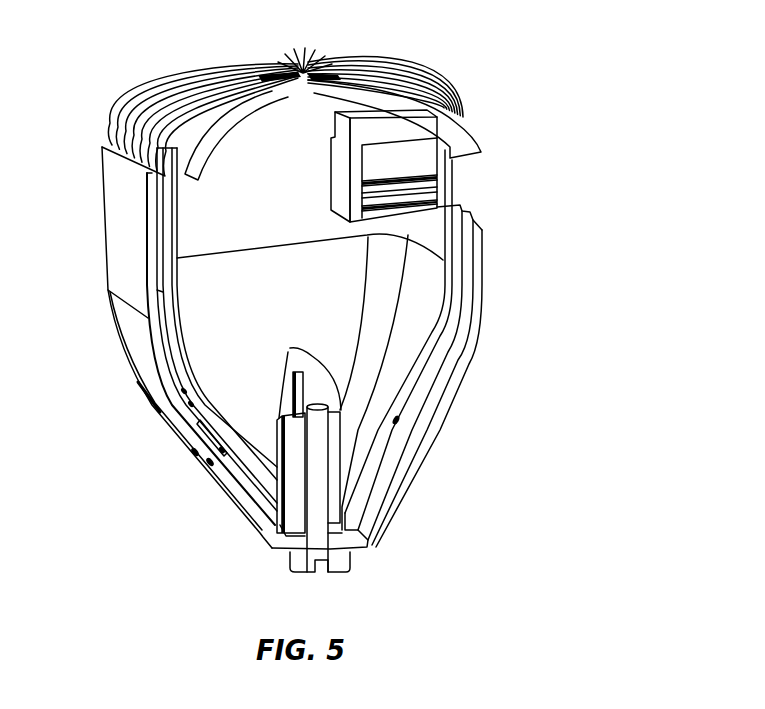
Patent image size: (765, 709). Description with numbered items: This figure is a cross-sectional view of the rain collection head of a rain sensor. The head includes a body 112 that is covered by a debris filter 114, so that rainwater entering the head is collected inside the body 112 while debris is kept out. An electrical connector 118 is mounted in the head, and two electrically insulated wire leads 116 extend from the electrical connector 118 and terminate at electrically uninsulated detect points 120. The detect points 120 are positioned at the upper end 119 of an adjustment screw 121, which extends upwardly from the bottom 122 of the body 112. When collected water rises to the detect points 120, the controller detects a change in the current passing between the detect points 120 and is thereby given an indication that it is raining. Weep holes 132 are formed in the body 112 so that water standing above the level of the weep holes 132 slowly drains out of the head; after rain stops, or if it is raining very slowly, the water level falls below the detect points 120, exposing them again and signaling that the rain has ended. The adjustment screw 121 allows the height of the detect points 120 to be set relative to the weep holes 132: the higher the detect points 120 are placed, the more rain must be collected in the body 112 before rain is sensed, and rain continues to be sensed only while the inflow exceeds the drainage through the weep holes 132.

The body 112 is at (118, 366).
The debris filter 114 is at (420, 75).
The wire leads 116 is at (443, 313).
The electrical connector 118 is at (466, 177).
The upper end 119 is at (318, 447).
The detect points 120 is at (290, 350).
The adjustment screw 121 is at (340, 560).
The bottom 122 is at (428, 427).
The weep holes 132 is at (400, 418).